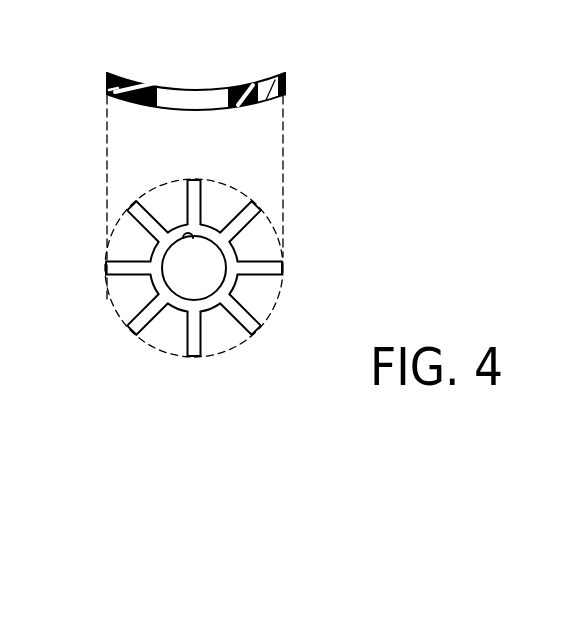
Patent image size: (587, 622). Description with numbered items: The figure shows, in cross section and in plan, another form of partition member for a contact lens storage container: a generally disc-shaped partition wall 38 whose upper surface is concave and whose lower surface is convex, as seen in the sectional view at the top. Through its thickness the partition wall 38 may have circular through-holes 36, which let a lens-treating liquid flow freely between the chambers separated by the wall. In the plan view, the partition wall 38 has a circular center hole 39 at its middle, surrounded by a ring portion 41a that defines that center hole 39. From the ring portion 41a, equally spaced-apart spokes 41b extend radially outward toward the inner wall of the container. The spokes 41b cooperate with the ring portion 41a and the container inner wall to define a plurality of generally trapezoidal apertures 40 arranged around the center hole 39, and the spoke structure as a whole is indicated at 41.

The through-holes 36 is at (217, 91).
The partition wall 38 is at (302, 88).
The center hole 39 is at (185, 234).
The trapezoidal apertures 40 is at (145, 228).
The spoke 41 is at (258, 318).
The ring portion 41a is at (178, 308).
The spokes 41b is at (253, 208).